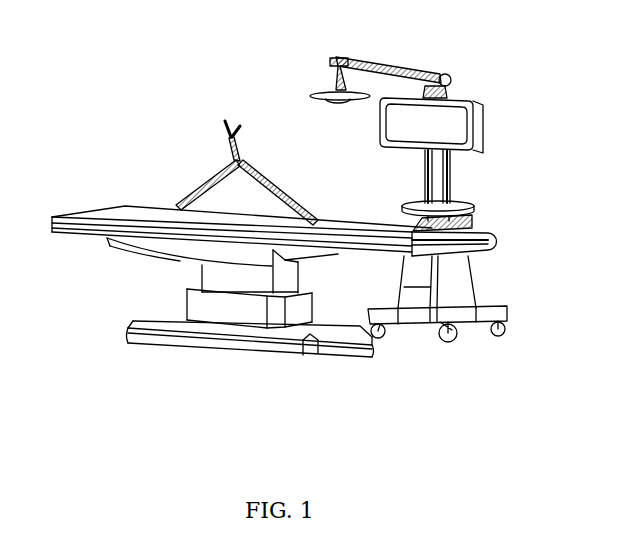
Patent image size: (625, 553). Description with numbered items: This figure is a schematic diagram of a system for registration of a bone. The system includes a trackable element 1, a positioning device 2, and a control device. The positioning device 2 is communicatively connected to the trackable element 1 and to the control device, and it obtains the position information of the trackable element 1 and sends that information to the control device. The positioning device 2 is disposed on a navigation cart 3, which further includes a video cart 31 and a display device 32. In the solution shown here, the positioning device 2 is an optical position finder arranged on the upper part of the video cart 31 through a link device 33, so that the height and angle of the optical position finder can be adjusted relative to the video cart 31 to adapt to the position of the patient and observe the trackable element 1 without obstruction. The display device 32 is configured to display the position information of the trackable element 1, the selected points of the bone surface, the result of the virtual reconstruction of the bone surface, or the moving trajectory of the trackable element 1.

The trackable element 1 is at (241, 152).
The positioning device 2 is at (313, 86).
The navigation cart 3 is at (392, 189).
The video cart 31 is at (462, 280).
The display device 32 is at (474, 101).
The link device 33 is at (400, 64).